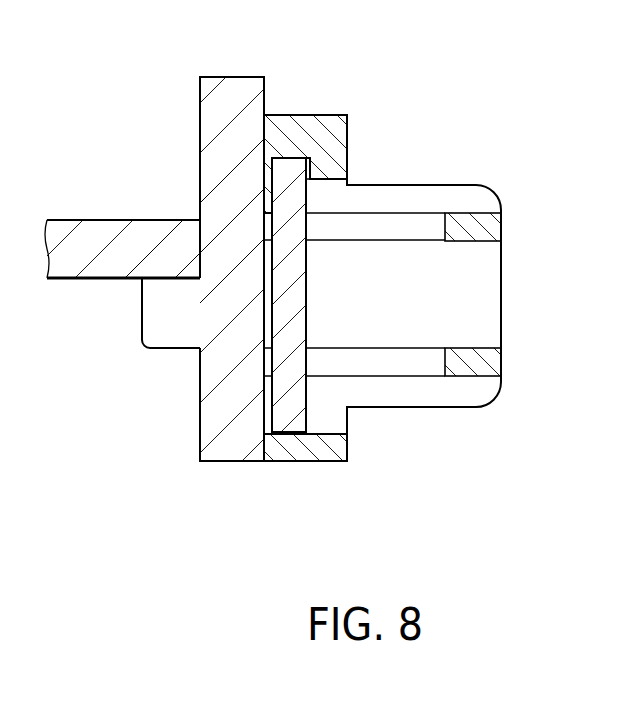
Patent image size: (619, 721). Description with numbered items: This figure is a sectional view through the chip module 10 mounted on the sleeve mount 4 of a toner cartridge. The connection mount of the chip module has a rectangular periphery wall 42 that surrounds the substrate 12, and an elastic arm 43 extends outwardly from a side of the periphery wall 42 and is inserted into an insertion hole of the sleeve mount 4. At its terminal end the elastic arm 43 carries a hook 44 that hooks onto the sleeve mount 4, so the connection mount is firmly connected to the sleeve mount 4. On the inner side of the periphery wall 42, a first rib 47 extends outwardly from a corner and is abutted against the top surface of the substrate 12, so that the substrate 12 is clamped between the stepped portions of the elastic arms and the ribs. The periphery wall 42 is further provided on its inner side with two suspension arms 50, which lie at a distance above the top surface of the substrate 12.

The sleeve mount 4 is at (218, 167).
The chip module 10 is at (516, 178).
The substrate 12 is at (287, 405).
The periphery wall 42 is at (285, 123).
The elastic arm 43 is at (357, 300).
The hook 44 is at (175, 303).
The first rib 47 is at (327, 169).
The suspension arm 50 is at (469, 355).